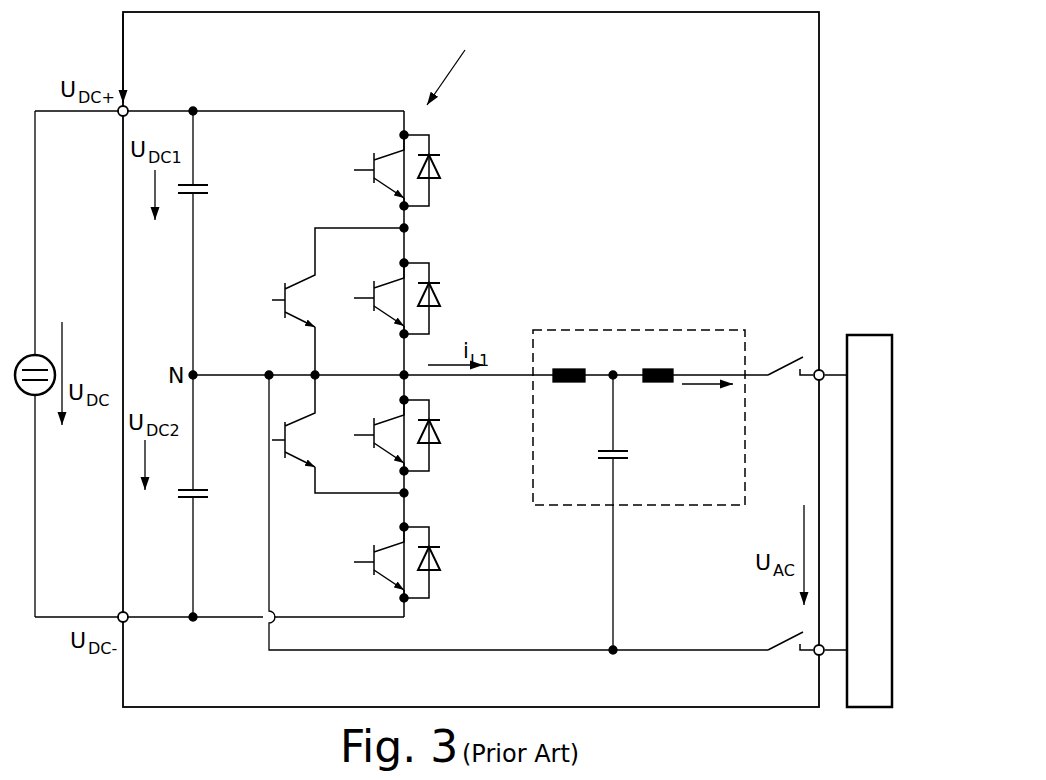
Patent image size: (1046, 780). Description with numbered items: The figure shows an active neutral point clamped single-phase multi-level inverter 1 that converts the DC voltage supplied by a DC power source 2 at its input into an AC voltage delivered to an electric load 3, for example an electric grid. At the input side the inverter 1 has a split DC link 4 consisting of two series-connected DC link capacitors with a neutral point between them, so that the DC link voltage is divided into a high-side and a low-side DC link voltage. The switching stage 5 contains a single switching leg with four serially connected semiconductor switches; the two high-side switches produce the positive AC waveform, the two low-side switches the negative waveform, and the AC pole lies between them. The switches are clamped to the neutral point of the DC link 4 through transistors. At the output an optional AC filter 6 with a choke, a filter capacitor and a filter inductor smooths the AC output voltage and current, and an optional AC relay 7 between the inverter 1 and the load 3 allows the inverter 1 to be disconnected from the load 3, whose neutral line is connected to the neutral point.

The inverter 1 is at (821, 68).
The DC power source 2 is at (29, 356).
The electric load 3 is at (858, 479).
The DC link 4 is at (197, 103).
The switching stage 5 is at (350, 100).
The AC filter 6 is at (614, 352).
The AC relay 7 is at (780, 350).